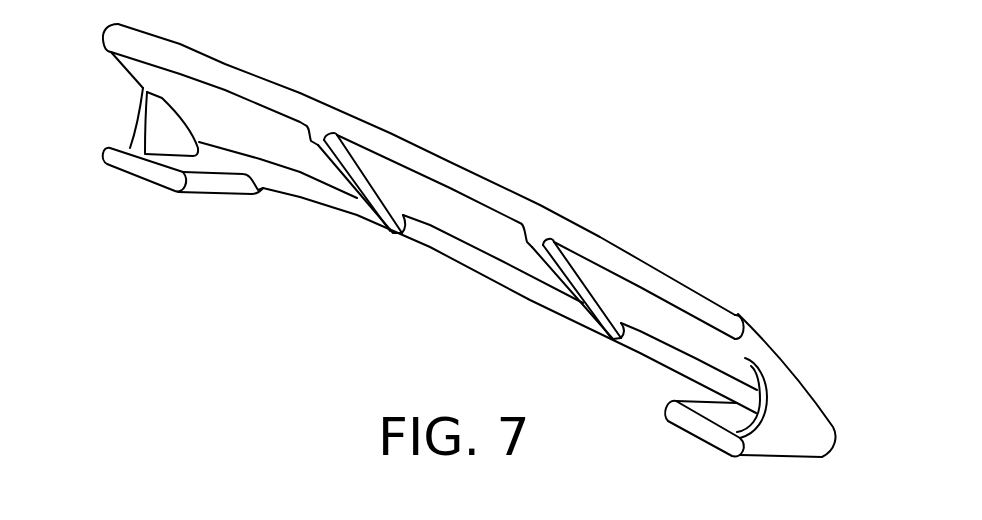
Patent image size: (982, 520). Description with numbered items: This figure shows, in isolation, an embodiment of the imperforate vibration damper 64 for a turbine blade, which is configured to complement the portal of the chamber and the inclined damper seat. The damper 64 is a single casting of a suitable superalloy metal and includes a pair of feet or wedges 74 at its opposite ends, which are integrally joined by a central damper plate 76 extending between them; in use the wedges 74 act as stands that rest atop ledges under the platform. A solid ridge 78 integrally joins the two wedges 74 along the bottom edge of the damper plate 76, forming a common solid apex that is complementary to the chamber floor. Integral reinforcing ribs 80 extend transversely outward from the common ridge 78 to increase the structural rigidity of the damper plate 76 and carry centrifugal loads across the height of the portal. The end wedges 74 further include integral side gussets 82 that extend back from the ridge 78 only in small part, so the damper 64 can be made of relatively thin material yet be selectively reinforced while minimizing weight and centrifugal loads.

The damper 64 is at (465, 266).
The wedges 74 is at (113, 150).
The damper plate 76 is at (681, 281).
The ridge 78 is at (660, 348).
The reinforcing ribs 80 is at (542, 258).
The side gussets 82 is at (137, 120).